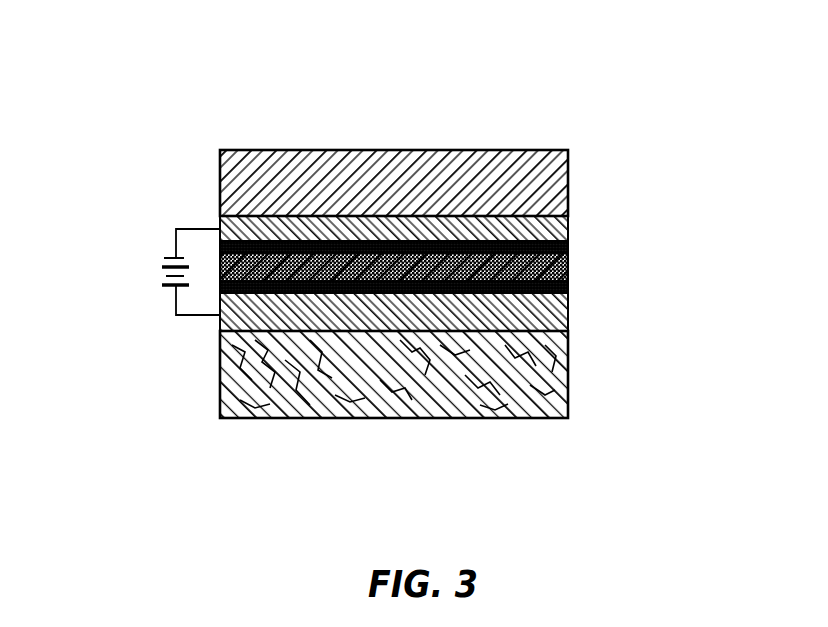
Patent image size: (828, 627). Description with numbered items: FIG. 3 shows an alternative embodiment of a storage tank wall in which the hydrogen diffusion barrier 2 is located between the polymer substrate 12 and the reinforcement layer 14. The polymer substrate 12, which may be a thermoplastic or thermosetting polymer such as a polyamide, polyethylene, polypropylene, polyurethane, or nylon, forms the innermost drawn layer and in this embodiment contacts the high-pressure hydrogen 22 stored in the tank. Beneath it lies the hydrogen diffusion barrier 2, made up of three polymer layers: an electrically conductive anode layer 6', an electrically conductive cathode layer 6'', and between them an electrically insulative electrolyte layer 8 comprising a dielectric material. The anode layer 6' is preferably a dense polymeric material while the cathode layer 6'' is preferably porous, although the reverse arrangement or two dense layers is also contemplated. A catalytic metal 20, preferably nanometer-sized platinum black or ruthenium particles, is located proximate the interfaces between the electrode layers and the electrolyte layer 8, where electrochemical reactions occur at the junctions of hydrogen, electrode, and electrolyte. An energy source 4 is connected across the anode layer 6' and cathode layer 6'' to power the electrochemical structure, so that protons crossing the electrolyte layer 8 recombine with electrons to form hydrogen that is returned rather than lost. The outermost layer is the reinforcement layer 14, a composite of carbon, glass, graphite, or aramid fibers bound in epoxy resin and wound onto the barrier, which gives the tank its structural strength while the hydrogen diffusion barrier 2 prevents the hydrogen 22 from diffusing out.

The hydrogen diffusion barrier 2 is at (368, 288).
The energy source 4 is at (166, 262).
The anode layer 6' is at (353, 207).
The cathode layer 6'' is at (341, 359).
The electrolyte layer 8 is at (220, 276).
The polymer substrate 12 is at (566, 173).
The reinforcement layer 14 is at (557, 420).
The catalytic metal 20 is at (398, 291).
The hydrogen 22 is at (327, 108).